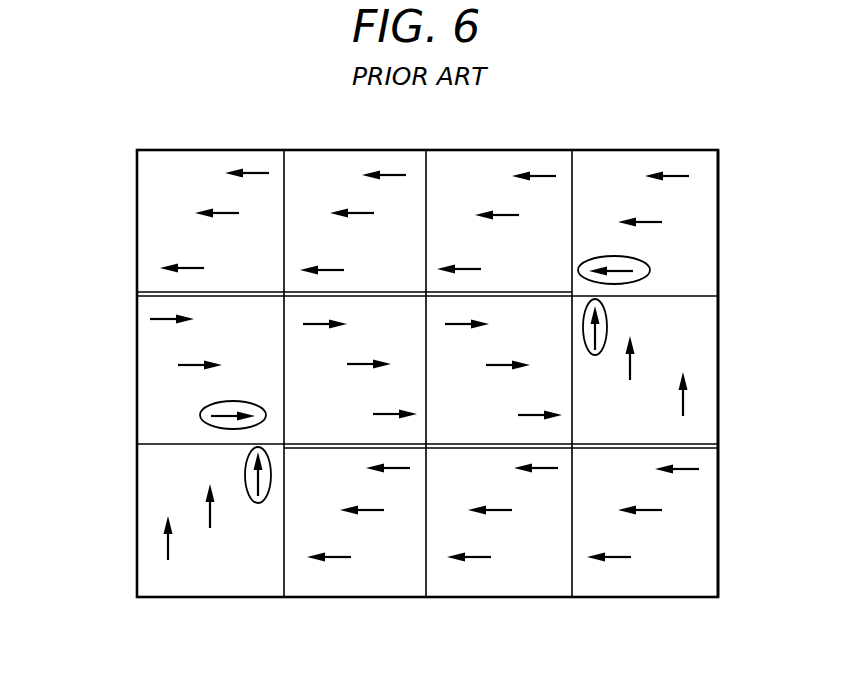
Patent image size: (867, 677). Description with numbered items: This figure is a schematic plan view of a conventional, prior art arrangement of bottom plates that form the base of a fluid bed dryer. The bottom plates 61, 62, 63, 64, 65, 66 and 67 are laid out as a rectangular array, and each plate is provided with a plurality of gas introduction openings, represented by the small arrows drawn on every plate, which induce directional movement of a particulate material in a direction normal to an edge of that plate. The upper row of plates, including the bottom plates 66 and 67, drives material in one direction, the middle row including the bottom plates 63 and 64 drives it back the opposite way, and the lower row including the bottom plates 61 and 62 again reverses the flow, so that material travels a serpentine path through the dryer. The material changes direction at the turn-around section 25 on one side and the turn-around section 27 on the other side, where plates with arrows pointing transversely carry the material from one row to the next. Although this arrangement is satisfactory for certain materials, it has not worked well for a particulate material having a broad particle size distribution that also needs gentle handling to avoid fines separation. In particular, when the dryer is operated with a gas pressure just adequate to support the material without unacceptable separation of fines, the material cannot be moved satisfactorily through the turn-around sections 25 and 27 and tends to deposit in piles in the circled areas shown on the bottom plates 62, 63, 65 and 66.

The turn-around section 25 is at (131, 456).
The turn-around section 27 is at (742, 301).
The bottom plate 61 is at (373, 577).
The bottom plate 62 is at (233, 574).
The bottom plate 63 is at (147, 396).
The bottom plate 64 is at (362, 403).
The bottom plate 65 is at (702, 350).
The bottom plate 66 is at (702, 238).
The bottom plate 67 is at (508, 177).